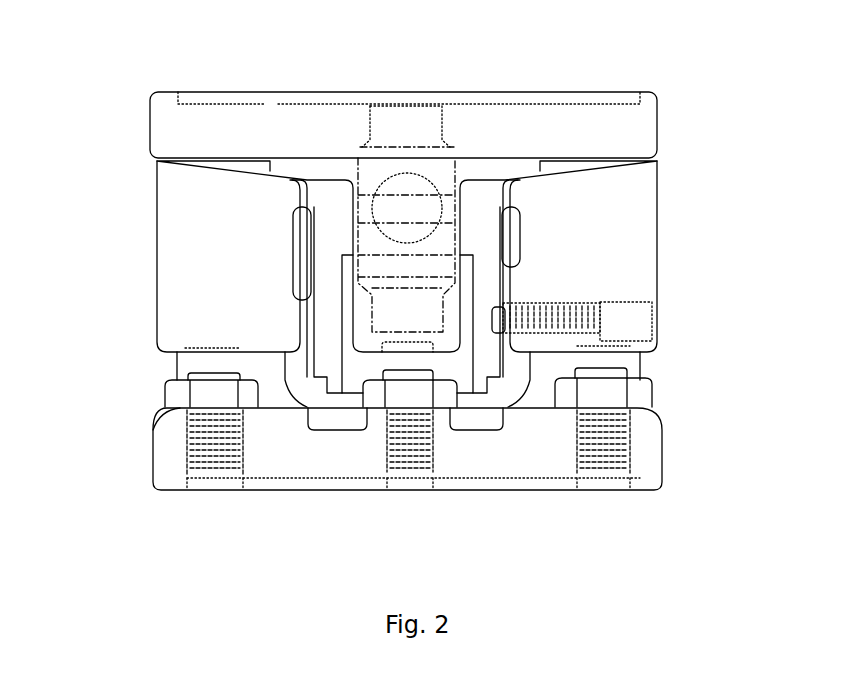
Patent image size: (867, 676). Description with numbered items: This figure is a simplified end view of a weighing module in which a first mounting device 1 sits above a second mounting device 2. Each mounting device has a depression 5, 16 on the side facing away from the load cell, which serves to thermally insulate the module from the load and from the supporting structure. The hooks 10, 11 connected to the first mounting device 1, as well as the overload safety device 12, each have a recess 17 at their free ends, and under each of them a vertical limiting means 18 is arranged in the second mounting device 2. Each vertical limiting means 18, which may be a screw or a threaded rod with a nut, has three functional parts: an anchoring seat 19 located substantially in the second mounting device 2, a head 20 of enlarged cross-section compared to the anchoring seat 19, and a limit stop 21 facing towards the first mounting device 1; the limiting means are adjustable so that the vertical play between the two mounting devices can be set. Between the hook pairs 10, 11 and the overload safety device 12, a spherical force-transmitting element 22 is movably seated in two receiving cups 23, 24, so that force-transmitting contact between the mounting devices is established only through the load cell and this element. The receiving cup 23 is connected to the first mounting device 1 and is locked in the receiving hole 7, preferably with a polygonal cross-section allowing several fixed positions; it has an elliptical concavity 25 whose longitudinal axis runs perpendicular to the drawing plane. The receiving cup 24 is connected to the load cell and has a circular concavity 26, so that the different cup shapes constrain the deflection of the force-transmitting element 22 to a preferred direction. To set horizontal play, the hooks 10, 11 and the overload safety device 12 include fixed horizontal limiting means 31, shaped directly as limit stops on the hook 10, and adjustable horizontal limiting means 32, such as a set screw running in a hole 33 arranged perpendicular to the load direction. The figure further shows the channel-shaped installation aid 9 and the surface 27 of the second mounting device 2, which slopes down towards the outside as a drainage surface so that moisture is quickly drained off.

The first mounting device 1 is at (173, 128).
The second mounting device 2 is at (512, 452).
The depression 5 is at (238, 100).
The receiving hole 7 is at (364, 110).
The installation aid 9 is at (342, 422).
The hook 10 is at (200, 232).
The hook 11 is at (298, 236).
The overload safety device 12 is at (349, 208).
The depression 16 is at (347, 485).
The recess 17 is at (200, 348).
The vertical limiting means 18 is at (172, 448).
The anchoring seat 19 is at (607, 448).
The head 20 is at (635, 395).
The limit stop 21 is at (630, 370).
The force-transmitting element 22 is at (407, 207).
The receiving cup 23 is at (360, 140).
The receiving cup 24 is at (428, 267).
The concavity 25 is at (401, 162).
The concavity 26 is at (384, 243).
The surface 27 is at (160, 417).
The fixed horizontal limiting means 31 is at (297, 323).
The adjustable horizontal limiting means 32 is at (583, 307).
The hole 33 is at (637, 314).